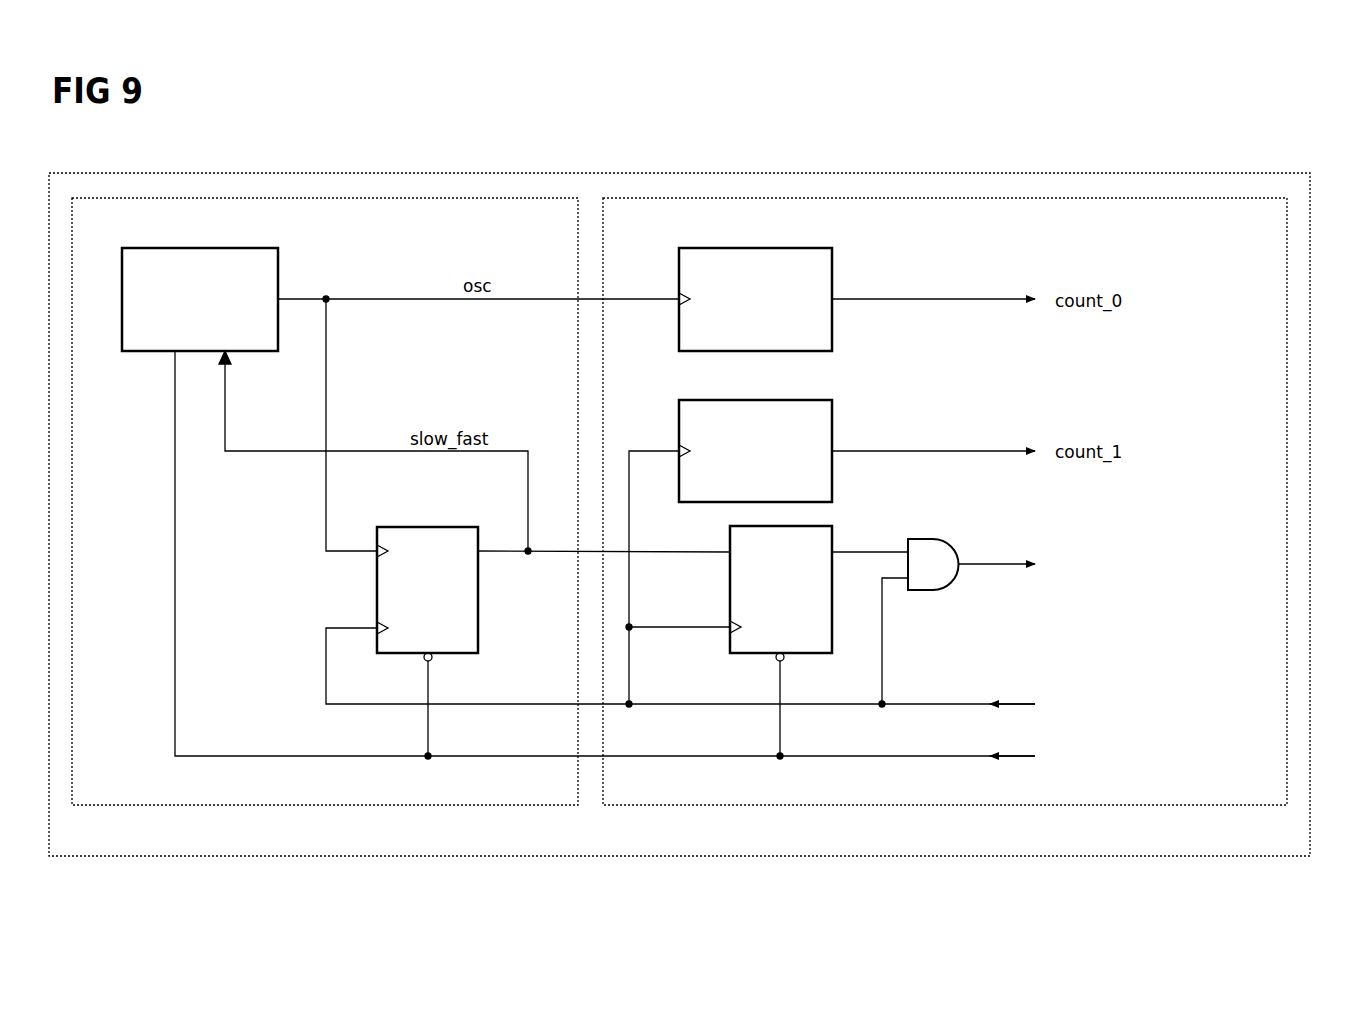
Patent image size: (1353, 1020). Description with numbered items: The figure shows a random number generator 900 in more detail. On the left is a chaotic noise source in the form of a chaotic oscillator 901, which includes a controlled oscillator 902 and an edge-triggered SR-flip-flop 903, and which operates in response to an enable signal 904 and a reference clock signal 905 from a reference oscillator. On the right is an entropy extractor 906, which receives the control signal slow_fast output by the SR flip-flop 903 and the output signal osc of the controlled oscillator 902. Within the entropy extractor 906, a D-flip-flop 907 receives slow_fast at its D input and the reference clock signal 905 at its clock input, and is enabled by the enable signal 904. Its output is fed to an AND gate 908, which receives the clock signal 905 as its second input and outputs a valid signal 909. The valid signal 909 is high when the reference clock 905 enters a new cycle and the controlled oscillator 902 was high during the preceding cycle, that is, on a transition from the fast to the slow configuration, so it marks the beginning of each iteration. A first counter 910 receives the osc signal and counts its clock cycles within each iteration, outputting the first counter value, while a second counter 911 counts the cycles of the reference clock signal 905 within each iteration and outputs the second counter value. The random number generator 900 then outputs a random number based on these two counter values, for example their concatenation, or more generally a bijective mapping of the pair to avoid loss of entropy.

The random number generator 900 is at (1277, 122).
The chaotic oscillator 901 is at (530, 198).
The controlled oscillator 902 is at (278, 260).
The edge-triggered SR-flip-flop 903 is at (377, 580).
The enable signal 904 is at (1073, 738).
The reference clock signal 905 is at (1073, 684).
The entropy extractor 906 is at (967, 198).
The D-flip-flop 907 is at (832, 526).
The AND gate 908 is at (948, 540).
The valid signal 909 is at (1092, 550).
The first counter 910 is at (832, 260).
The second counter 911 is at (832, 412).